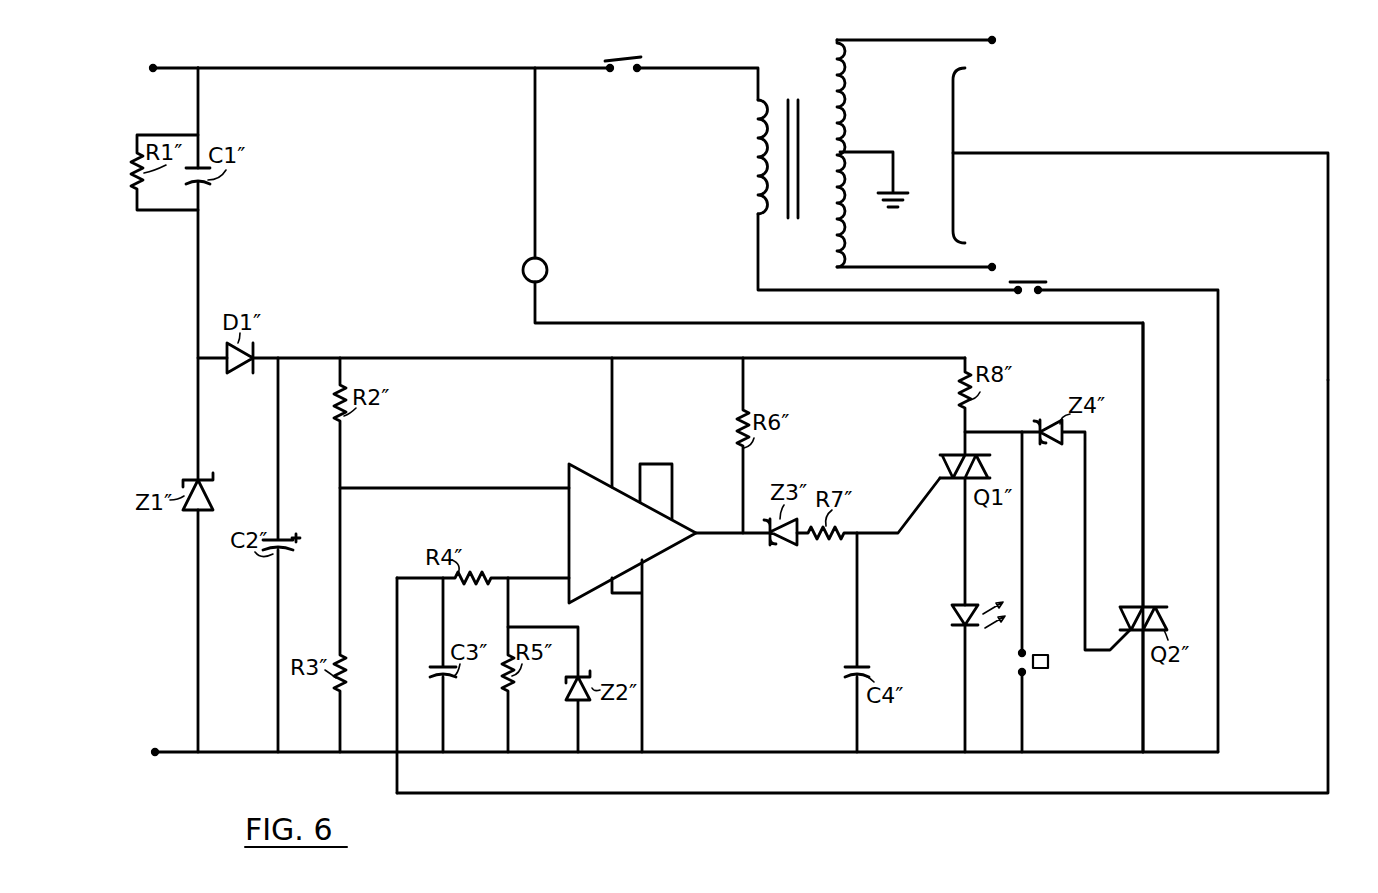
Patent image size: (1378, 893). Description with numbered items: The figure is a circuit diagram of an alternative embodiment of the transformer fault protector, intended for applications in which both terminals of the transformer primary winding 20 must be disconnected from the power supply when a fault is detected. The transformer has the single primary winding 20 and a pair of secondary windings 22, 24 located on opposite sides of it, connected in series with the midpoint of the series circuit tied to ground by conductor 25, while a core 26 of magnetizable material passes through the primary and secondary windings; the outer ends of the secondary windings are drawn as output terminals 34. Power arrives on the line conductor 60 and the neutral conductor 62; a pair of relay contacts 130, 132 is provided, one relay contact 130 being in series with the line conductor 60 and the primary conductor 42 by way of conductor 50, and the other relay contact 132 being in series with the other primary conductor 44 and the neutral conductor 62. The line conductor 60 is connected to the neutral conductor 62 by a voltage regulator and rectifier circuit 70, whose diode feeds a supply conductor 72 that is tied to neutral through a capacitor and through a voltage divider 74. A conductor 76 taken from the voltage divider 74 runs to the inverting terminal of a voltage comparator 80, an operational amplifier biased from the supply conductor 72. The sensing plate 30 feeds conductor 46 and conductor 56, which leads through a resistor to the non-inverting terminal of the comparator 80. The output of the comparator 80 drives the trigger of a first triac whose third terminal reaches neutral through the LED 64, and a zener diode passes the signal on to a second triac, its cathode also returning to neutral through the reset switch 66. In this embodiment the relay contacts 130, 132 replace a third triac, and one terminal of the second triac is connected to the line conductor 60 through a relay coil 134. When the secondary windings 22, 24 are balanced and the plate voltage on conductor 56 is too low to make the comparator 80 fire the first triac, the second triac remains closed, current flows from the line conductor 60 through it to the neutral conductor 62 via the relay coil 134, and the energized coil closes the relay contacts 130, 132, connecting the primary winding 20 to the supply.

The primary winding 20 is at (760, 140).
The secondary winding 22 is at (848, 96).
The secondary winding 24 is at (848, 254).
The conductor 25 is at (860, 152).
The core 26 is at (802, 103).
The sensing plate 30 is at (956, 118).
The output terminals 34 is at (998, 40).
The primary conductor 42 is at (716, 68).
The primary conductor 44 is at (760, 263).
The conductor 46 is at (1117, 153).
The conductor 50 is at (355, 68).
The conductor 56 is at (1330, 382).
The line conductor 60 is at (192, 68).
The neutral conductor 62 is at (176, 755).
The LED 64 is at (950, 618).
The reset switch 66 is at (1048, 668).
The voltage regulator and rectifier circuit 70 is at (292, 290).
The supply conductor 72 is at (425, 356).
The voltage divider 74 is at (378, 461).
The conductor 76 is at (510, 486).
The voltage comparator 80 is at (624, 498).
The relay contact 130 is at (612, 60).
The relay contact 132 is at (1036, 282).
The relay coil 134 is at (548, 265).